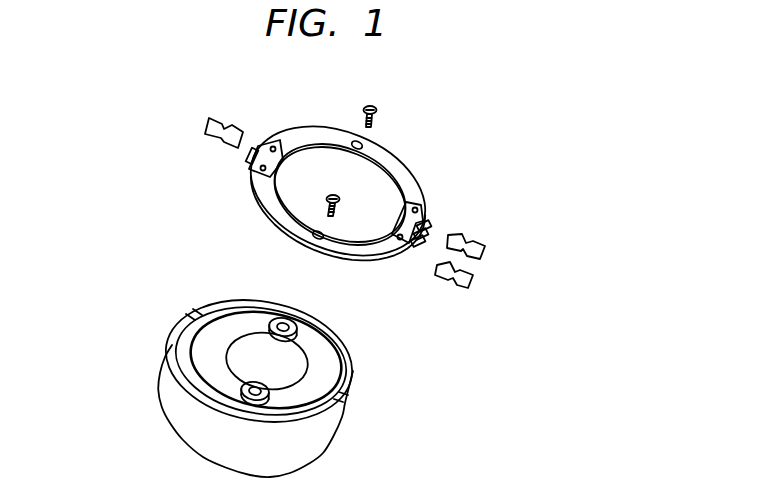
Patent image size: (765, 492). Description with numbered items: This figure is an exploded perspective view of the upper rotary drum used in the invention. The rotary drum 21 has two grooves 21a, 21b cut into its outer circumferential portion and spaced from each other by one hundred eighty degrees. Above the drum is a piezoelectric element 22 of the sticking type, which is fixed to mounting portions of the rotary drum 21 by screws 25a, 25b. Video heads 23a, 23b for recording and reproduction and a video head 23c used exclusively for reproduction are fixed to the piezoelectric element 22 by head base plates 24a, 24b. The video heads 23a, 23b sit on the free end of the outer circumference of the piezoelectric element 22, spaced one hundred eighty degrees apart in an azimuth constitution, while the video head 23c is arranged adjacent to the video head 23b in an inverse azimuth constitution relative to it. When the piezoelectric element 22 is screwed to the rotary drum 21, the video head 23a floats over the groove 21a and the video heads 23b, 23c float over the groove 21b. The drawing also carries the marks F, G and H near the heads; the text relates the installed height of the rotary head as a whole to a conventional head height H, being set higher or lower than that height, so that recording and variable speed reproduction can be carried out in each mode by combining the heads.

The rotary drum 21 is at (158, 402).
The groove 21a is at (188, 322).
The groove 21b is at (345, 400).
The piezoelectric element 22 is at (380, 246).
The video head 23a is at (252, 160).
The video head 23b is at (430, 231).
The video head 23c is at (423, 246).
The head base plate 24a is at (261, 144).
The head base plate 24b is at (427, 217).
The screw 25a is at (382, 111).
The screw 25b is at (340, 200).
The force direction indicator F is at (211, 129).
The force direction indicator G is at (466, 283).
The conventional head height H is at (479, 253).